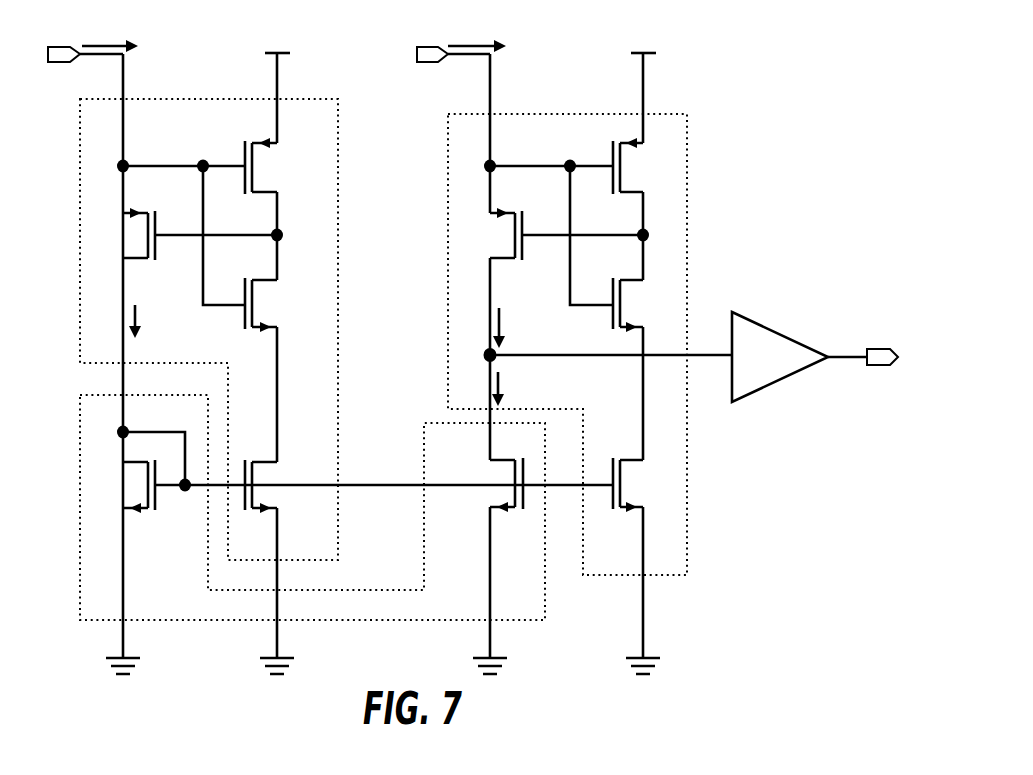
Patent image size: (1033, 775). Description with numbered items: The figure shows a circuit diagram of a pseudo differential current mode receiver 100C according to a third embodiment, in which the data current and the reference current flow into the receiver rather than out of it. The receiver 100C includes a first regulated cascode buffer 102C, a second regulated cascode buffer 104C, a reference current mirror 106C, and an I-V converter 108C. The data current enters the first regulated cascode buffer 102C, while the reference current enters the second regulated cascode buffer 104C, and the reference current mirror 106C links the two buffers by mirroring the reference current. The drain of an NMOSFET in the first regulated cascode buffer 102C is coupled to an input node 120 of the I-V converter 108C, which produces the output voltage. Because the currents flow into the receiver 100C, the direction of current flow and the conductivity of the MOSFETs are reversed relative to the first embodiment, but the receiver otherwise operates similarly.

The pseudo differential current mode receiver 100C is at (868, 113).
The first regulated cascode buffer 102C is at (447, 247).
The second regulated cascode buffer 104C is at (338, 213).
The reference current mirror 106C is at (381, 624).
The I-V converter 108C is at (773, 324).
The input node 120 is at (485, 351).